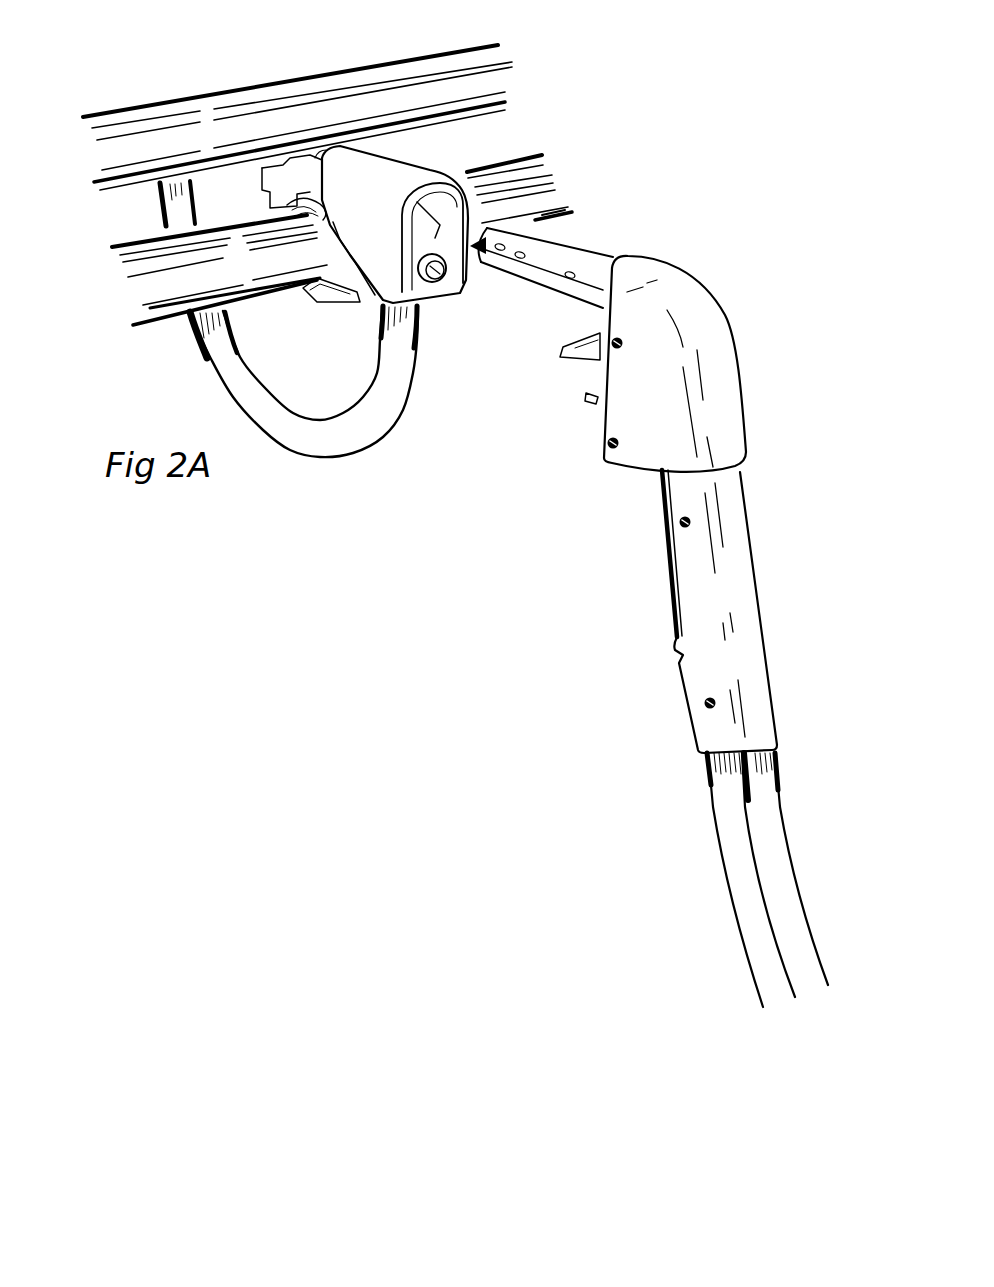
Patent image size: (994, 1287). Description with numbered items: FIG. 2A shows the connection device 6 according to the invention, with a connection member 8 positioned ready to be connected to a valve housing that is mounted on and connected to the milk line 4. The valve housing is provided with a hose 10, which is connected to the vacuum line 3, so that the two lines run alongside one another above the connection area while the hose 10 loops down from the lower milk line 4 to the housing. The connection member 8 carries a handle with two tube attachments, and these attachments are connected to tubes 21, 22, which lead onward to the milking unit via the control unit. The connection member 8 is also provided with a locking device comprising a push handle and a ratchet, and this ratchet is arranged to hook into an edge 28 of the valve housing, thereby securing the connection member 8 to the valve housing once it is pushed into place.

The vacuum line 3 is at (291, 82).
The milk line 4 is at (163, 323).
The connection device 6 is at (674, 550).
The connection member 8 is at (727, 325).
The hose 10 is at (347, 446).
The tube 21 is at (783, 810).
The tube 22 is at (717, 845).
The edge 28 is at (441, 304).